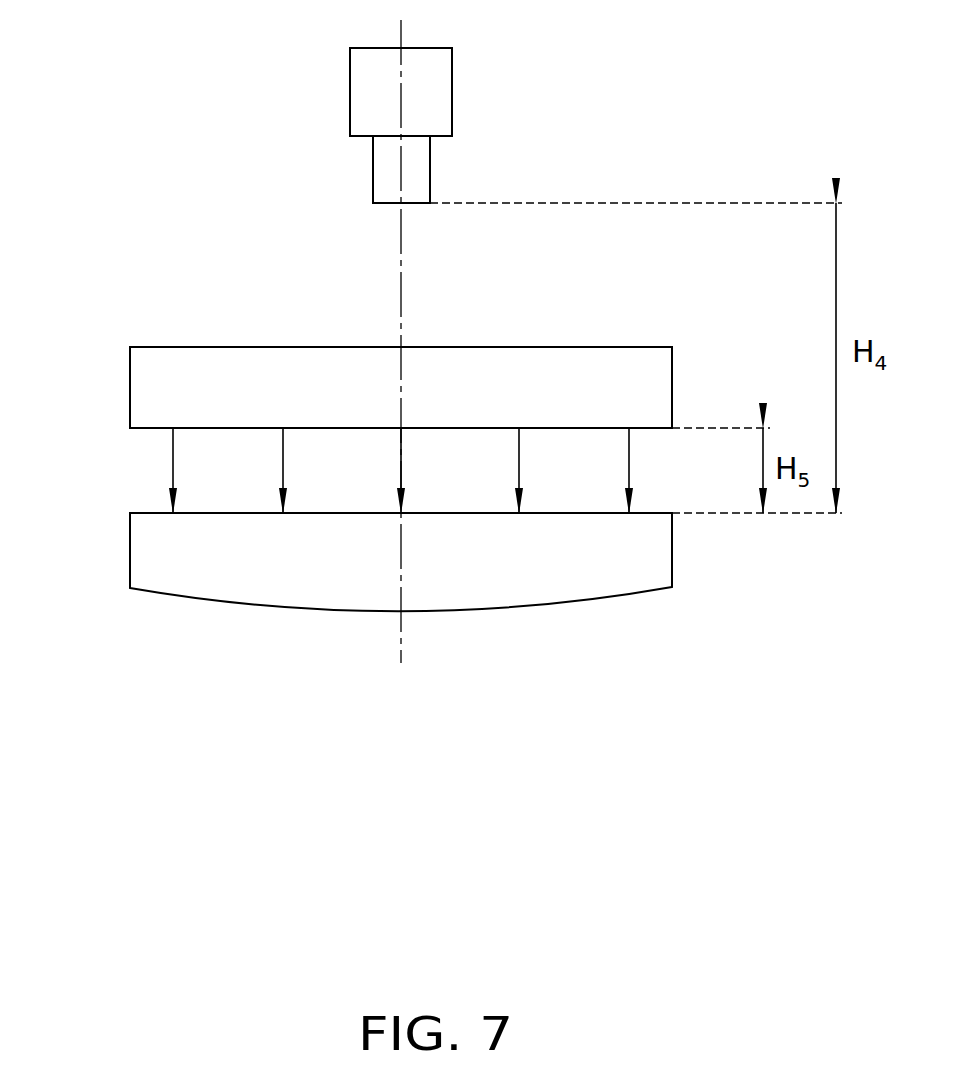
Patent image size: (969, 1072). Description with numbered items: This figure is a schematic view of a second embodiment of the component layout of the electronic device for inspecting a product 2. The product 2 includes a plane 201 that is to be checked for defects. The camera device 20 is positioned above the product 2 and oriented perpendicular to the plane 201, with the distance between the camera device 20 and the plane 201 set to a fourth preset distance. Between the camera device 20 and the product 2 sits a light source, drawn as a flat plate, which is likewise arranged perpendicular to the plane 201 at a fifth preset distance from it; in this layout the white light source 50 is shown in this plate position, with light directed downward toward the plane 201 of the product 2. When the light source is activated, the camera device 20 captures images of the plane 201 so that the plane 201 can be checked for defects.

The camera device 20 is at (422, 86).
The white light source 50 is at (645, 386).
The product 2 is at (285, 593).
The plane 201 is at (152, 513).